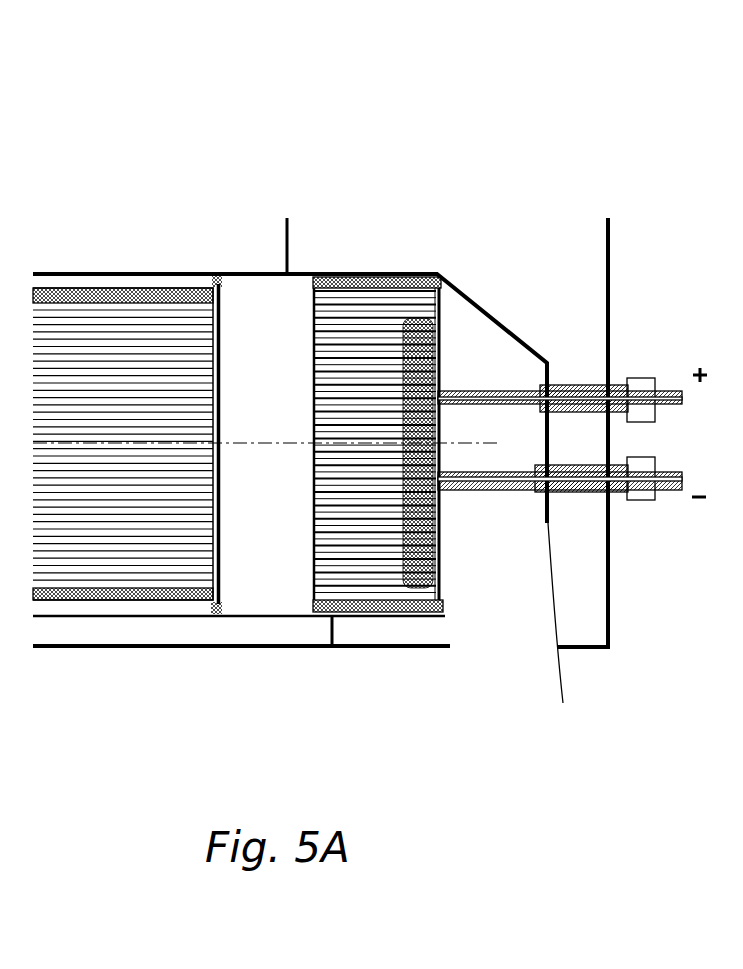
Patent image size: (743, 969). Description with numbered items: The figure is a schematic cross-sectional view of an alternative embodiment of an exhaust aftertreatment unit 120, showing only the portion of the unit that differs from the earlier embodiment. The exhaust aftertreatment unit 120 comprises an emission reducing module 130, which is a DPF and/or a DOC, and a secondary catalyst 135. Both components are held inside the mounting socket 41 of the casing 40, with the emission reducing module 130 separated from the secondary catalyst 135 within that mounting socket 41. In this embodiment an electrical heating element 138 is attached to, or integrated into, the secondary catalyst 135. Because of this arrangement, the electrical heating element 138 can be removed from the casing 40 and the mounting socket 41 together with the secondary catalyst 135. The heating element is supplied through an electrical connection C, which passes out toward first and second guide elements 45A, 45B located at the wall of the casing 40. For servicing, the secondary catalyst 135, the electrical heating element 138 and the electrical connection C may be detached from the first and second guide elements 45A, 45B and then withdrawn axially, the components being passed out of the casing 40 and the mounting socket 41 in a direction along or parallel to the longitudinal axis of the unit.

The exhaust aftertreatment unit 120 is at (427, 148).
The emission reducing module 130 is at (130, 582).
The secondary catalyst 135 is at (358, 596).
The electrical heating element 138 is at (420, 575).
The casing 40 is at (265, 647).
The mounting socket 41 is at (300, 617).
The first guide element 45A is at (648, 377).
The second guide element 45B is at (642, 500).
The electrical connection C is at (497, 493).